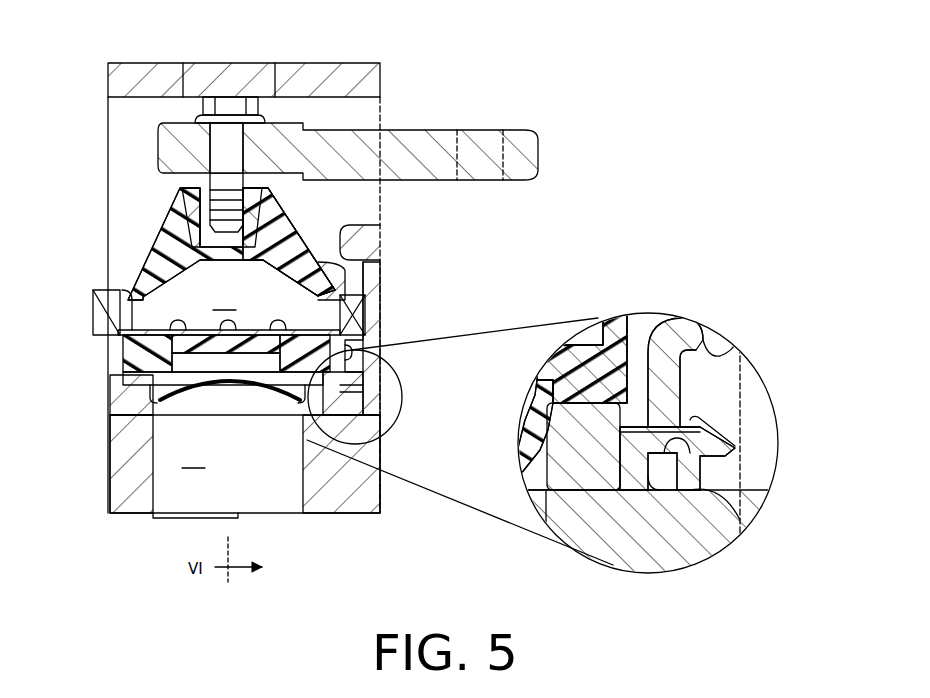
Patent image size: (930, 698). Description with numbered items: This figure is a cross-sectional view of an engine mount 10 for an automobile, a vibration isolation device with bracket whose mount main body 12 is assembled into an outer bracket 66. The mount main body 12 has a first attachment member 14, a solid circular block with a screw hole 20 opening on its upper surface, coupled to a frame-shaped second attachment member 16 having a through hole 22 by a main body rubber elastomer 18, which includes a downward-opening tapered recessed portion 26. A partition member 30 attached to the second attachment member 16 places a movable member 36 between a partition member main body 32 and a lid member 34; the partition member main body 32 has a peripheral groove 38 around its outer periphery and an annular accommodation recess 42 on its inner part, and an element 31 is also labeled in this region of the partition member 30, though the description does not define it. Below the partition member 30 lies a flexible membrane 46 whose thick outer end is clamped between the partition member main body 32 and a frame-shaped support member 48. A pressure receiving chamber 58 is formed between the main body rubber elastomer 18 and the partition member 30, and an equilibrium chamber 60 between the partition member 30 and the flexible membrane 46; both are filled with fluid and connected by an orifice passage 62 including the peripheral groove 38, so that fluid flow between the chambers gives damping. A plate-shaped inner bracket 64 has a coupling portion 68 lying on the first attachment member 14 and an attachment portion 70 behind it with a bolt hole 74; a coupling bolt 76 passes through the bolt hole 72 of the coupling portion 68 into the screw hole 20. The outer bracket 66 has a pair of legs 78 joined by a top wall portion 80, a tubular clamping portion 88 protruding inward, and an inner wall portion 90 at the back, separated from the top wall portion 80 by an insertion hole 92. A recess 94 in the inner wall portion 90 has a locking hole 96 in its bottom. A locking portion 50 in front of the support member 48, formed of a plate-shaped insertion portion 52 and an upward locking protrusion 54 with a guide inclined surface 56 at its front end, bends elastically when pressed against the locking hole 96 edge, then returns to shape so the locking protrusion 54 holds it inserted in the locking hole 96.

The engine mount 10 is at (432, 38).
The mount main body 12 is at (195, 222).
The first attachment member 14 is at (196, 215).
The second attachment member 16 is at (92, 322).
The main body rubber elastomer 18 is at (288, 228).
The screw hole 20 is at (228, 168).
The through hole 22 is at (138, 300).
The recessed portion 26 is at (325, 292).
The partition member 30 is at (258, 368).
The plate 31 is at (282, 328).
The partition member main body 32 is at (228, 340).
The lid member 34 is at (178, 328).
The movable member 36 is at (262, 330).
The peripheral groove 38 is at (152, 358).
The accommodation recess 42 is at (296, 382).
The flexible membrane 46 is at (265, 345).
The support member 48 is at (108, 396).
The locking portion 50 is at (372, 405).
The insertion portion 52 is at (640, 442).
The locking protrusion 54 is at (692, 418).
The guide inclined surface 56 is at (722, 425).
The pressure receiving chamber 58 is at (224, 298).
The equilibrium chamber 60 is at (178, 378).
The orifice passage 62 is at (318, 320).
The inner bracket 64 is at (358, 155).
The outer bracket 66 is at (431, 312).
The coupling portion 68 is at (178, 137).
The attachment portion 70 is at (522, 148).
The bolt hole 72 is at (233, 135).
The bolt hole 74 is at (500, 180).
The coupling bolt 76 is at (228, 105).
The leg 78 is at (125, 243).
The top wall portion 80 is at (355, 80).
The clamping portion 88 is at (310, 500).
The inner wall portion 90 is at (375, 325).
The insertion hole 92 is at (345, 228).
The recess 94 is at (365, 375).
The locking hole 96 is at (360, 392).